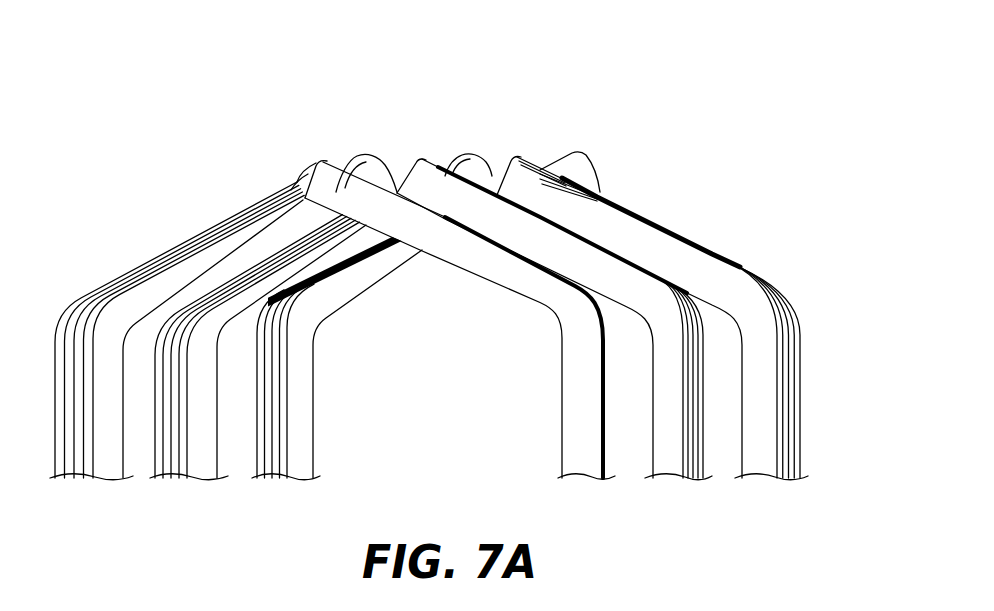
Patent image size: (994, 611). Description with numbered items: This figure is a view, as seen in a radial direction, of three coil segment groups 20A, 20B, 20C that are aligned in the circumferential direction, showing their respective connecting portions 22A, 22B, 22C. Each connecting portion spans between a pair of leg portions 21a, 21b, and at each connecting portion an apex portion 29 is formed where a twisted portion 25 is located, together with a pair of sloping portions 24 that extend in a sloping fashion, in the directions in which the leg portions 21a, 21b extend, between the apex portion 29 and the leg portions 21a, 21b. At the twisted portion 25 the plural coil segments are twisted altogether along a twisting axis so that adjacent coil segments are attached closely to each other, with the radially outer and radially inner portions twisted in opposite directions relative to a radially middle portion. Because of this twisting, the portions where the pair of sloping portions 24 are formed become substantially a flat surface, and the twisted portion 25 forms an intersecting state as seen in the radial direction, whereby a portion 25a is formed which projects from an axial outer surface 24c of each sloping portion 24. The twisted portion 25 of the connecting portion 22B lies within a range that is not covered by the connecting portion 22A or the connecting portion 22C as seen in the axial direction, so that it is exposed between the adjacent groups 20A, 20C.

The connecting portion 22A is at (537, 317).
The coil segment group 20A is at (715, 277).
The connecting portion 22B is at (467, 318).
The coil segment group 20B is at (637, 287).
The connecting portion 22C is at (401, 258).
The coil segment group 20C is at (330, 258).
The leg portion 21a is at (762, 452).
The leg portion 21b is at (300, 452).
The sloping portion 24 is at (273, 277).
The axial outer surface 24c is at (287, 174).
The twisted portion 25 is at (455, 119).
The apex portion 29 is at (362, 156).
The projecting portion 25a is at (405, 156).